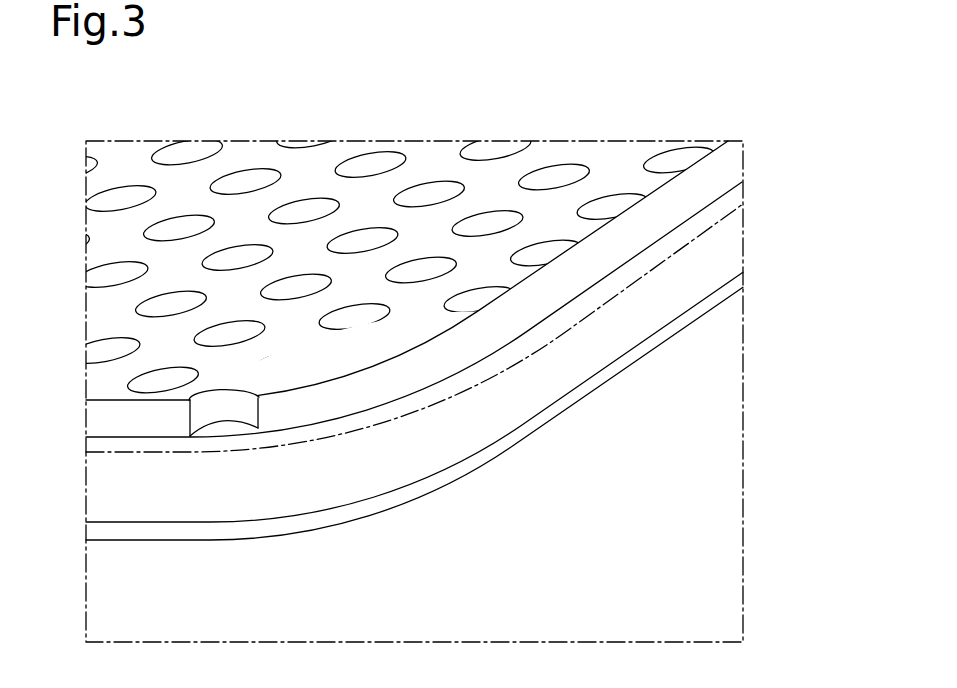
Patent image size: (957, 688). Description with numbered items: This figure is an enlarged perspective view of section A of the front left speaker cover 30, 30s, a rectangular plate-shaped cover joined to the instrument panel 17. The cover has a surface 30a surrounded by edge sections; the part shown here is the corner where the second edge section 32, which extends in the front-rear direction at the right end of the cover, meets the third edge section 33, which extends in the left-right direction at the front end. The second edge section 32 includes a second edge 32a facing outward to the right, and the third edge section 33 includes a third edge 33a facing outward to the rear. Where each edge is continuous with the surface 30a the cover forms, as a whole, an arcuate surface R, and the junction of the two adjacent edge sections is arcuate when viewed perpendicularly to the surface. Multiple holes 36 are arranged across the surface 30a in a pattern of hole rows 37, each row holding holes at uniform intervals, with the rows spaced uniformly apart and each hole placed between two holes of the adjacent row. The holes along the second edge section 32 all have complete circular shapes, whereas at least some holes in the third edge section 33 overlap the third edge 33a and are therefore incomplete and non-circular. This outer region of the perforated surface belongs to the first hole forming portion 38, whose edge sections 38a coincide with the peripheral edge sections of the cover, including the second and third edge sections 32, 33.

The front left speaker cover 30 is at (793, 81).
The panel surface 30s is at (866, 51).
The surface 30a is at (314, 172).
The holes 36 is at (187, 220).
The hole rows 37 is at (516, 122).
The first hole forming portion 38 is at (431, 160).
The edge sections 38a is at (414, 385).
The instrument panel 17 is at (673, 280).
The arcuate surface R is at (673, 210).
The second edge section 32 is at (580, 278).
The second edge 32a is at (525, 407).
The third edge section 33 is at (130, 495).
The third edge 33a is at (235, 510).
The section A is at (743, 613).